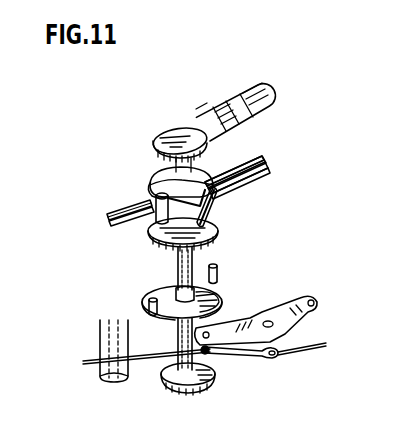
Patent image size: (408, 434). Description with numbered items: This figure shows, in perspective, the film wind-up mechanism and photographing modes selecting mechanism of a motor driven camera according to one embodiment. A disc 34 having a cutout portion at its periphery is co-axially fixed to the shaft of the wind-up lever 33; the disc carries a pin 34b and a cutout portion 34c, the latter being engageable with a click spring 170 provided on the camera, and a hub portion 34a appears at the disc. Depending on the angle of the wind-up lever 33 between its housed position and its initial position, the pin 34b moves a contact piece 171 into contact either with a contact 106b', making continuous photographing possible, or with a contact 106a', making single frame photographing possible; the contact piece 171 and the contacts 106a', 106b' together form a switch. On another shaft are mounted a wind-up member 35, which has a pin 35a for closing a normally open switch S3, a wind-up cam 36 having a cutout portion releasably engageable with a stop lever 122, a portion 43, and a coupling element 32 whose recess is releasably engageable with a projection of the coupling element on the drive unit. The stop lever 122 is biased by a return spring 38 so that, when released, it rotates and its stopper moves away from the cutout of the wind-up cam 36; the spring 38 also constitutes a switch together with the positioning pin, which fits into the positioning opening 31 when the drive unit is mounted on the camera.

The wind-up lever 33 is at (243, 92).
The disc 34 is at (160, 168).
The hub of cam body 34a is at (152, 186).
The pin 34b is at (222, 155).
The cutout portion 34c is at (222, 192).
The contact 106a' is at (283, 166).
The contact piece 171 is at (270, 168).
The contact 106b' is at (285, 200).
The normally open switch S3 is at (118, 214).
The wind-up member 35 is at (219, 273).
The pin 35a is at (152, 215).
The click spring 170 is at (225, 237).
The wind-up cam 36 is at (150, 300).
The plate portion 43 is at (212, 300).
The positioning opening 31 is at (102, 336).
The coupling element 32 is at (170, 384).
The stop lever 122 is at (316, 303).
The return spring 38 is at (243, 358).